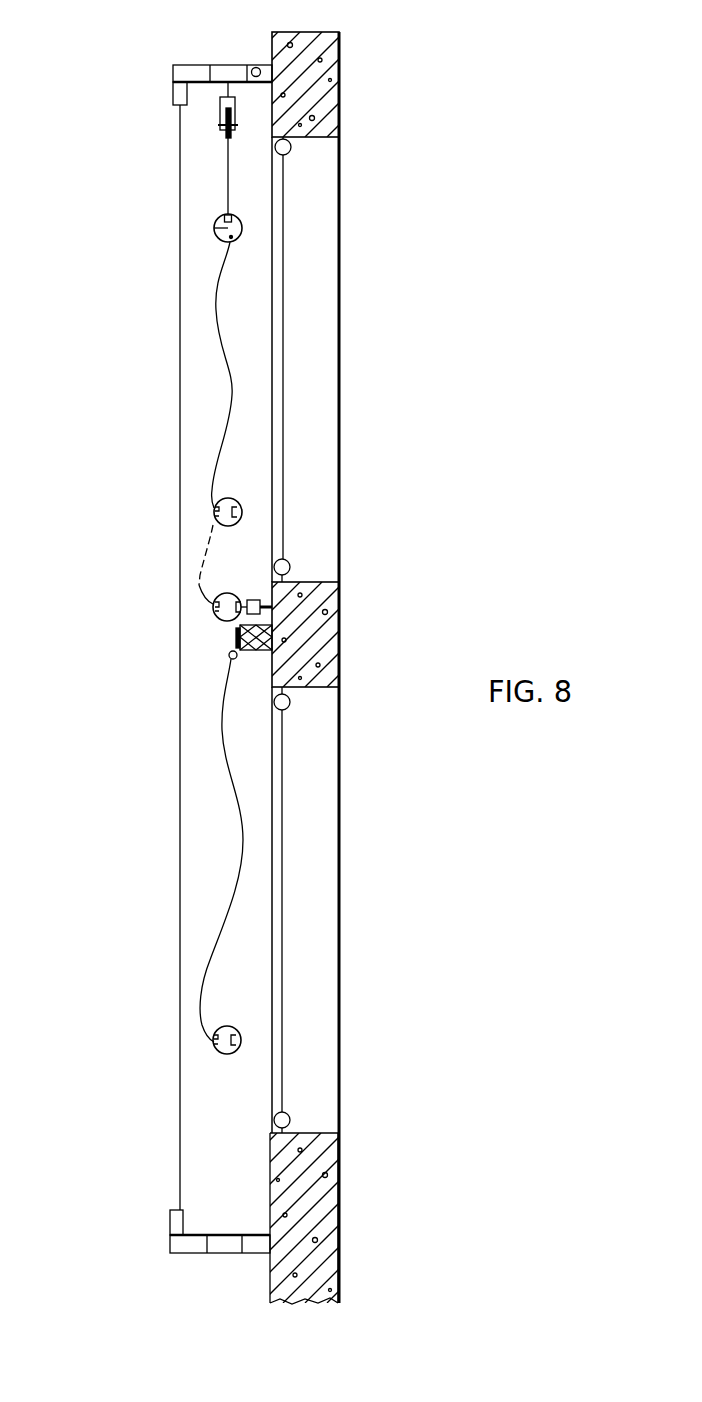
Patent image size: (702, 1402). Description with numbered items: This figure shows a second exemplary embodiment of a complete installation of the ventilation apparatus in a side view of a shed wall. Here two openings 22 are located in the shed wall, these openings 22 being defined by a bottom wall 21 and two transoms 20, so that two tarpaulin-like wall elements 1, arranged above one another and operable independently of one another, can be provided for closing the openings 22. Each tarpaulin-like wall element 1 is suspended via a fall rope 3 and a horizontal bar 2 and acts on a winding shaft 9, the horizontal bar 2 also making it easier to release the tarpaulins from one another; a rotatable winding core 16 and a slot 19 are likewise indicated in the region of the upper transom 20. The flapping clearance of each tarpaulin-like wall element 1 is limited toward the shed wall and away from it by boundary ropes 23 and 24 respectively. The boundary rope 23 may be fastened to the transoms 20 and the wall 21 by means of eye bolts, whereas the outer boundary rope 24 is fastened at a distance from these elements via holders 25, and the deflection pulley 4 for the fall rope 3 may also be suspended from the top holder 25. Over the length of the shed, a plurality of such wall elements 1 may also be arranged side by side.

The tarpaulin-like wall element 1 is at (232, 393).
The horizontal bar 2 is at (217, 232).
The fall rope 3 is at (228, 172).
The deflection pulley 4 is at (228, 135).
The winding shaft 9 is at (215, 515).
The winding core 16 is at (256, 66).
The slot 19 is at (228, 200).
The transom 20 is at (328, 96).
The wall 21 is at (338, 1162).
The opening 22 is at (358, 455).
The boundary rope 23 is at (285, 247).
The outer boundary rope 24 is at (180, 808).
The holder 25 is at (185, 72).